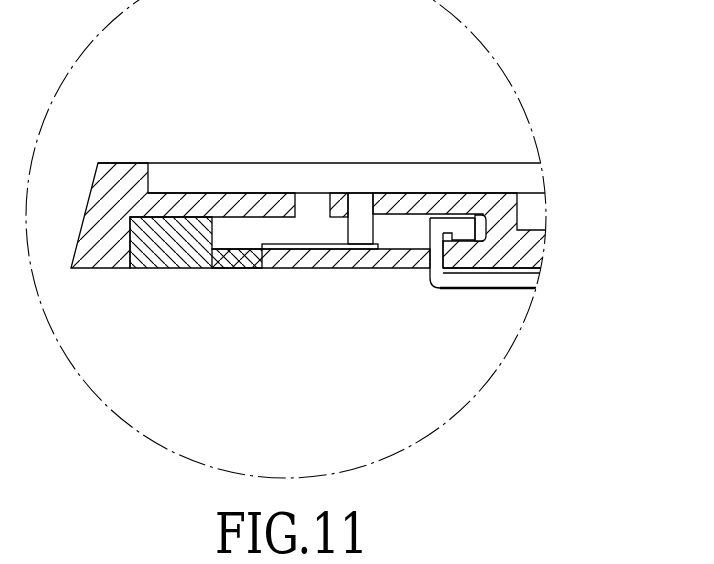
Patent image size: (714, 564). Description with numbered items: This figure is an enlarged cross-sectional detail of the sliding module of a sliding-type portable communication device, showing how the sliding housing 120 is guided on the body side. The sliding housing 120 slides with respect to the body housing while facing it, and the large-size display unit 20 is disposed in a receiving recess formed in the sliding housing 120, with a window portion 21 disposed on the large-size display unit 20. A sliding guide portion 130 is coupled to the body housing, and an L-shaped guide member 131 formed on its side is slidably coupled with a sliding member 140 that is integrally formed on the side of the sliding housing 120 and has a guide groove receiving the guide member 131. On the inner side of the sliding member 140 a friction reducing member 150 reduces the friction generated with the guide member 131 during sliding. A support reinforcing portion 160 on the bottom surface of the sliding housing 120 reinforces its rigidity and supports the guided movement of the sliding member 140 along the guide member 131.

The large-size display unit 20 is at (378, 141).
The window portion 21 is at (279, 182).
The sliding housing 120 is at (127, 173).
The sliding guide portion 130 is at (481, 221).
The guide member 131 is at (463, 226).
The sliding member 140 is at (483, 222).
The friction reducing member 150 is at (482, 232).
The support reinforcing portion 160 is at (187, 258).